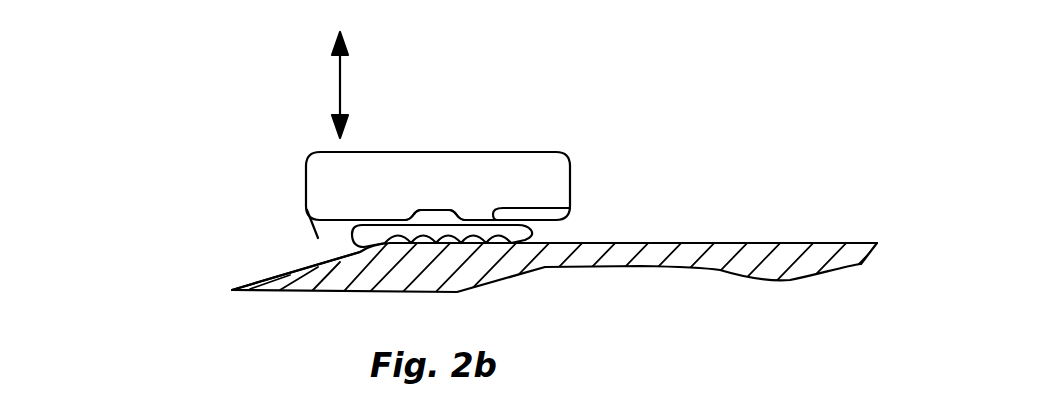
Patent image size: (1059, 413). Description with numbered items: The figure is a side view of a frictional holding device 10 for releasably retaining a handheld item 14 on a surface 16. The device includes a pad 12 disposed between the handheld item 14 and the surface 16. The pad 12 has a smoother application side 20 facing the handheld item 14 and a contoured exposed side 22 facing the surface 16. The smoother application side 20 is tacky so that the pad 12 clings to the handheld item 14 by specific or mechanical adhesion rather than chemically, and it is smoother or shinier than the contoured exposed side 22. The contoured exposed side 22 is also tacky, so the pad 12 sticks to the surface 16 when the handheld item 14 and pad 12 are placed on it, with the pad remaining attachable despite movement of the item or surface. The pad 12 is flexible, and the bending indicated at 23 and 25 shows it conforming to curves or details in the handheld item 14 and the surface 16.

The frictional holding device 10 is at (349, 238).
The pad 12 is at (565, 232).
The handheld item 14 is at (515, 150).
The surface 16 is at (847, 242).
The smoother application side 20 is at (570, 206).
The contoured exposed side 22 is at (488, 243).
The bending 23 is at (432, 215).
The bending 25 is at (358, 253).